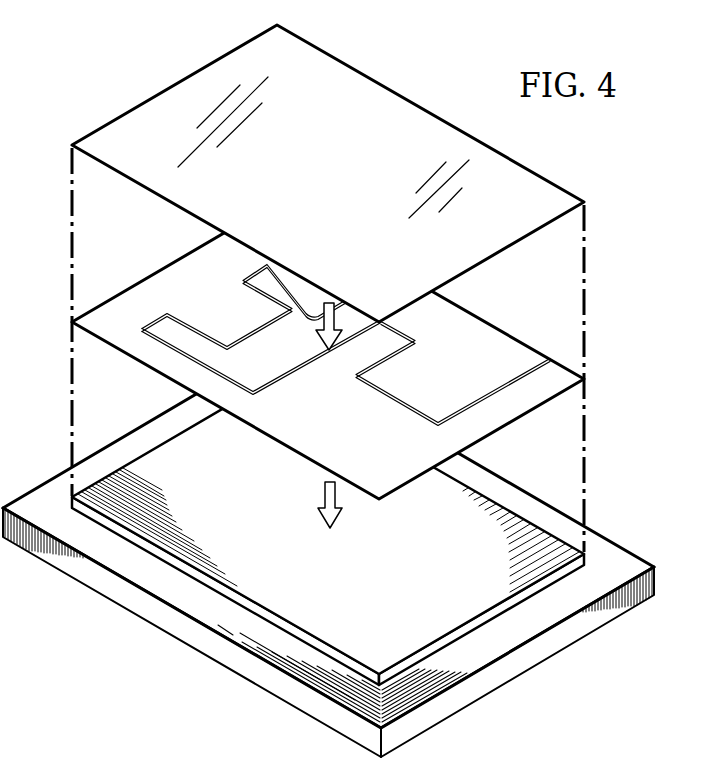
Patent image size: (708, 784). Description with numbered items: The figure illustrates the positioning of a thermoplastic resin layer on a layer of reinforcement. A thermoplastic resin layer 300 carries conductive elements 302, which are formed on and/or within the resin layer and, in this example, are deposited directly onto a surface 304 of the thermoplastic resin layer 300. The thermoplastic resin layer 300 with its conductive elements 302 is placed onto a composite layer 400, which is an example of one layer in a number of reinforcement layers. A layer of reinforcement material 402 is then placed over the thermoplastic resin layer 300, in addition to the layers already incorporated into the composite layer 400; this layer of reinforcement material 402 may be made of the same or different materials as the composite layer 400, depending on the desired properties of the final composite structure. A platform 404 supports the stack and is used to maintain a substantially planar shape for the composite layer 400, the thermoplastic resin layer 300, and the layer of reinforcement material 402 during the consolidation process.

The thermoplastic resin layer 300 is at (328, 350).
The conductive elements 302 is at (496, 392).
The surface 304 is at (528, 413).
The composite layer 400 is at (398, 562).
The layer of reinforcement material 402 is at (346, 186).
The platform 404 is at (156, 622).